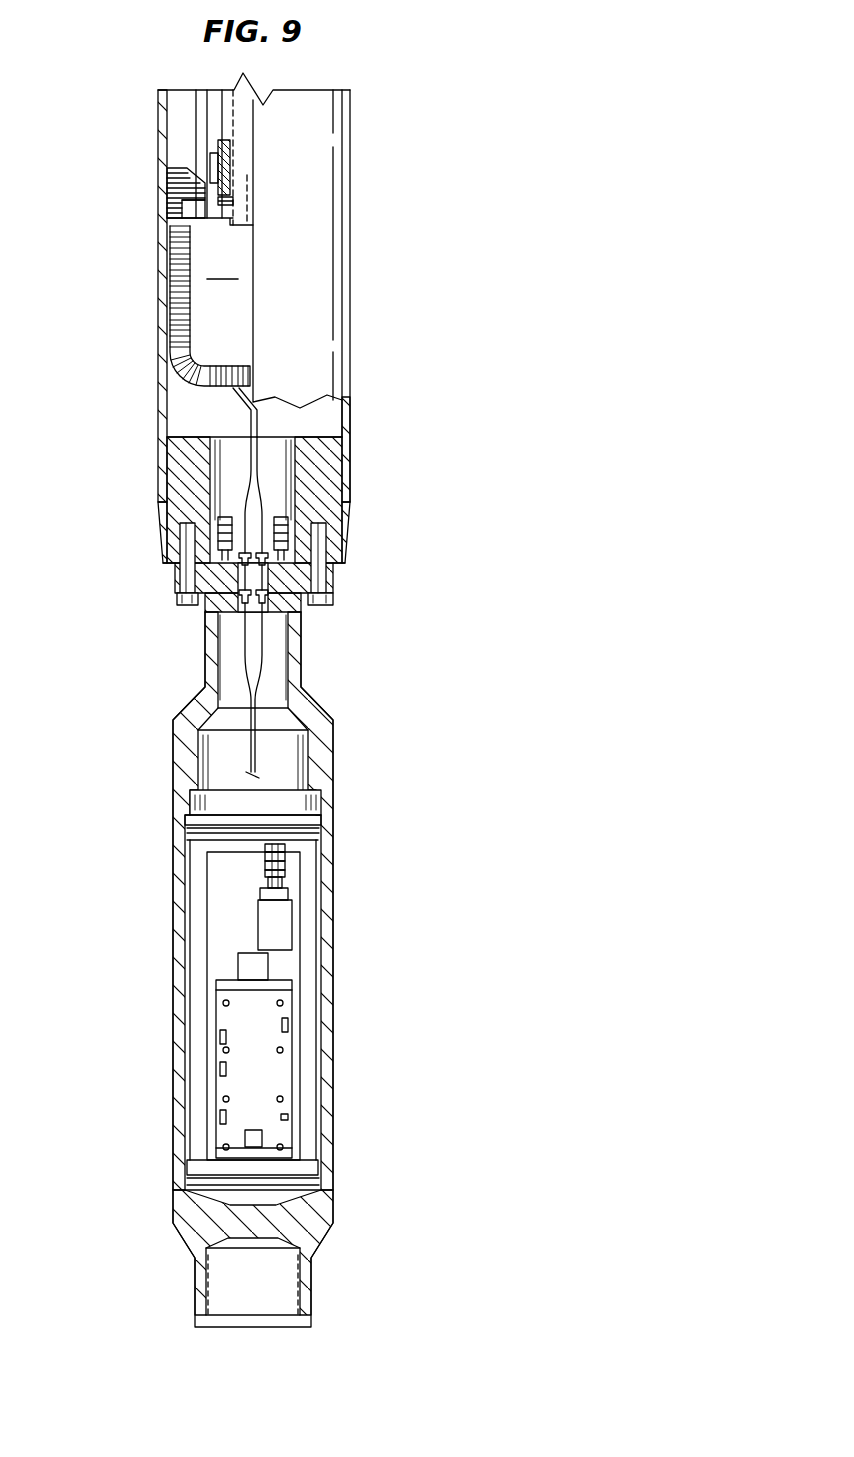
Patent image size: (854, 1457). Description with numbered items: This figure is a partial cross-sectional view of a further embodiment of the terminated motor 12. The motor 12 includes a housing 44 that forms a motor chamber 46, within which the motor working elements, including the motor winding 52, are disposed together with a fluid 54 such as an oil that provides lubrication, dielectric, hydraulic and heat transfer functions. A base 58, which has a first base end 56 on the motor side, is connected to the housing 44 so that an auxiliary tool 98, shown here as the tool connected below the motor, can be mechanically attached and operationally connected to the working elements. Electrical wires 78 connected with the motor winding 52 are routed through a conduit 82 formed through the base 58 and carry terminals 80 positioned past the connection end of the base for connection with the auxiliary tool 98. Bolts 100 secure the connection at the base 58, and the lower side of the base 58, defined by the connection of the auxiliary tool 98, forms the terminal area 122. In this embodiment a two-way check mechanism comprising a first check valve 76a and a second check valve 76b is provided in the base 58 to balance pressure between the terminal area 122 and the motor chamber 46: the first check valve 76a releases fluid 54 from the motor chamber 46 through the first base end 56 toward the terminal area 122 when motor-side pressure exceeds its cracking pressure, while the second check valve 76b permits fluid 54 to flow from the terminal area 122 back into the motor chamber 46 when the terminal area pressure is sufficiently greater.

The terminated motor 12 is at (375, 151).
The housing 44 is at (350, 250).
The motor chamber 46 is at (210, 185).
The fluid 54 is at (222, 303).
The motor winding 52 is at (180, 330).
The electrical wires 78 is at (252, 395).
The conduit 82 is at (262, 444).
The first base end 56 is at (330, 432).
The first check valve 76a is at (227, 525).
The second check valve 76b is at (283, 525).
The base 58 is at (180, 532).
The terminals 80 is at (240, 556).
The bolts 100 is at (334, 600).
The terminal area 122 is at (279, 593).
The auxiliary tool 98 is at (173, 740).